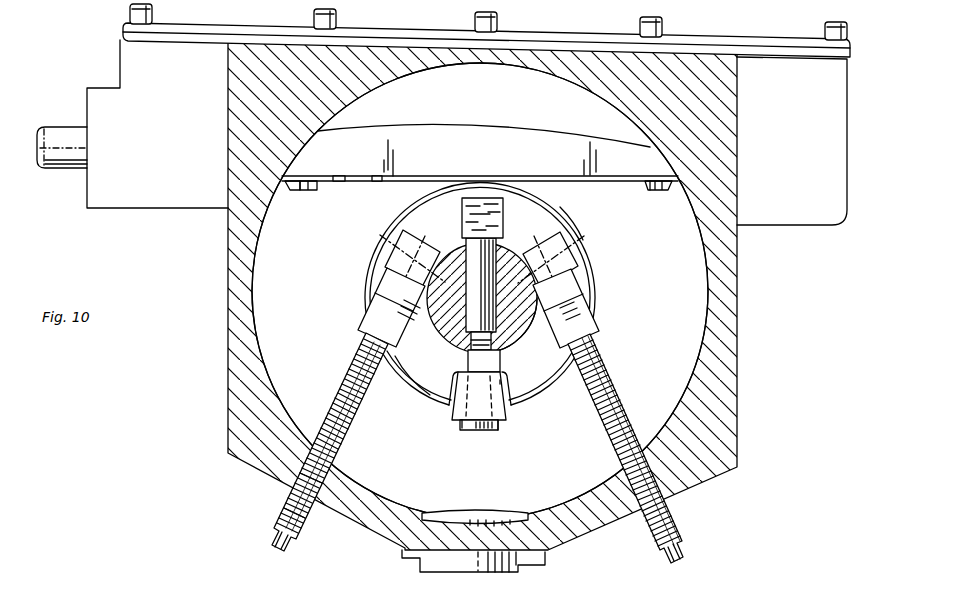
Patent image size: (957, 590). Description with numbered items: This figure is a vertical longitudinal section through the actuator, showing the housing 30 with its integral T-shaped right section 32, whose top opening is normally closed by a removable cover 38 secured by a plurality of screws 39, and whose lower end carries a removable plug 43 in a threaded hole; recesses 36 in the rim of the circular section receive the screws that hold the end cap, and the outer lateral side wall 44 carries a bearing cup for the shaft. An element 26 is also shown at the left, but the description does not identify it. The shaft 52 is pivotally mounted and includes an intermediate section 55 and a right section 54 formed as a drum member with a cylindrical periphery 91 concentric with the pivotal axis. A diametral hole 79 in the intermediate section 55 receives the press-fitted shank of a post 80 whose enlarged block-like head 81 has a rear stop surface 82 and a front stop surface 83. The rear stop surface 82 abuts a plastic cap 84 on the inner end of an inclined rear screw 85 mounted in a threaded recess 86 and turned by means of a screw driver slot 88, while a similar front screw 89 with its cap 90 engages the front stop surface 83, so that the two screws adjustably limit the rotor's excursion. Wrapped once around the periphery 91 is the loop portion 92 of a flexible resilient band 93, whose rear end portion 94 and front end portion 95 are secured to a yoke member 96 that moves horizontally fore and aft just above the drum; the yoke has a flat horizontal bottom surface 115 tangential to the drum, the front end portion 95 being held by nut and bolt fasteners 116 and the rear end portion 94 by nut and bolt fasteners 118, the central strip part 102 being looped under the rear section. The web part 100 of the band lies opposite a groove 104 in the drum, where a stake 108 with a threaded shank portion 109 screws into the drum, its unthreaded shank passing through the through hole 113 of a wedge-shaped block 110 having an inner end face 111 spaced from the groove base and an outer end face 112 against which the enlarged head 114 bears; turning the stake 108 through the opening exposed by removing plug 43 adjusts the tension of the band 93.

The shaft 26 is at (60, 130).
The housing 30 is at (742, 232).
The T-shaped right section 32 is at (832, 226).
The recesses 36 is at (385, 586).
The cover 38 is at (850, 50).
The screws 39 is at (153, 14).
The plug 43 is at (520, 578).
The side wall 44 is at (297, 333).
The shaft 52 is at (518, 244).
The right section 54 is at (396, 372).
The intermediate section 55 is at (451, 245).
The diametral hole 79 is at (470, 334).
The post 80 is at (498, 339).
The head 81 is at (486, 200).
The rear stop surface 82 is at (462, 216).
The front stop surface 83 is at (503, 220).
The cap 84 is at (362, 312).
The rear screw 85 is at (340, 388).
The threaded recess 86 is at (290, 470).
The screw driver slot 88 is at (270, 546).
The front screw 89 is at (622, 390).
The cap 90 is at (602, 326).
The cylindrical periphery 91 is at (585, 250).
The loop portion 92 is at (372, 258).
The band 93 is at (475, 182).
The rear end portion 94 is at (657, 178).
The front end portion 95 is at (309, 178).
The yoke member 96 is at (494, 127).
The web part 100 is at (448, 390).
The central strip part 102 is at (394, 176).
The groove 104 is at (503, 362).
The stake 108 is at (468, 364).
The threaded shank portion 109 is at (470, 356).
The block 110 is at (500, 417).
The inner end face 111 is at (494, 376).
The outer end face 112 is at (498, 430).
The through hole 113 is at (465, 418).
The head 114 is at (468, 432).
The flat horizontal bottom surface 115 is at (337, 183).
The nut and bolt fasteners 116 is at (292, 193).
The nut and bolt fasteners 118 is at (651, 196).